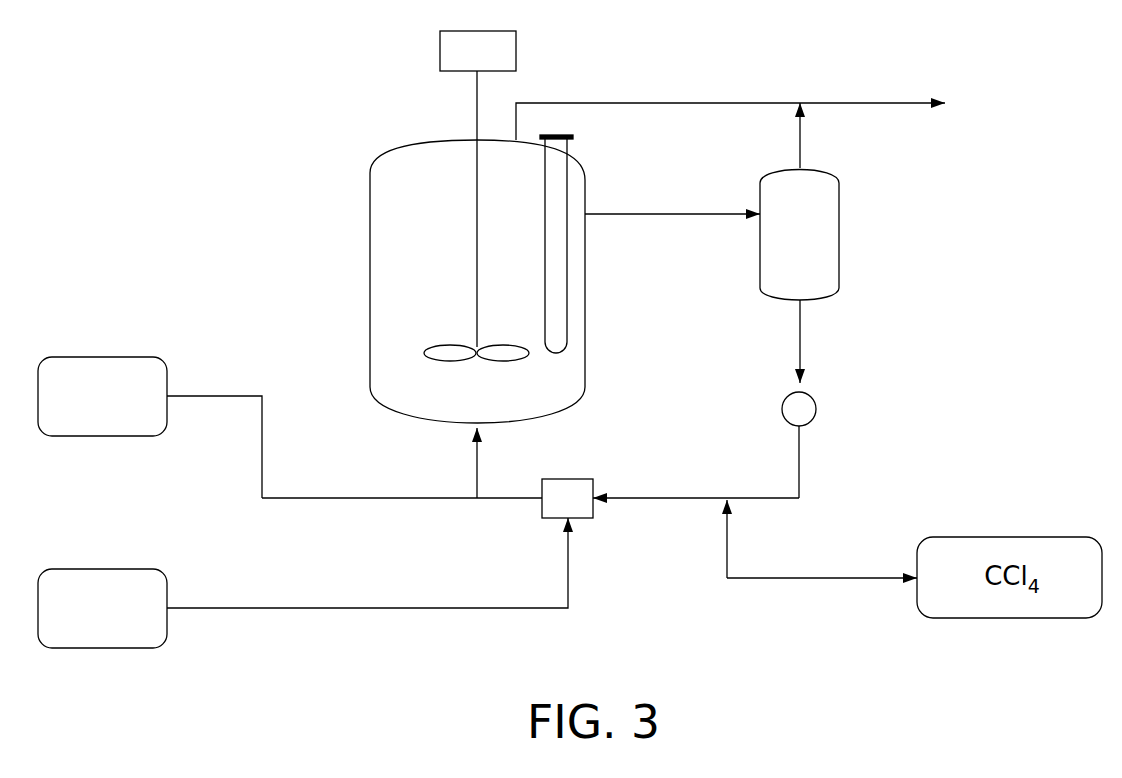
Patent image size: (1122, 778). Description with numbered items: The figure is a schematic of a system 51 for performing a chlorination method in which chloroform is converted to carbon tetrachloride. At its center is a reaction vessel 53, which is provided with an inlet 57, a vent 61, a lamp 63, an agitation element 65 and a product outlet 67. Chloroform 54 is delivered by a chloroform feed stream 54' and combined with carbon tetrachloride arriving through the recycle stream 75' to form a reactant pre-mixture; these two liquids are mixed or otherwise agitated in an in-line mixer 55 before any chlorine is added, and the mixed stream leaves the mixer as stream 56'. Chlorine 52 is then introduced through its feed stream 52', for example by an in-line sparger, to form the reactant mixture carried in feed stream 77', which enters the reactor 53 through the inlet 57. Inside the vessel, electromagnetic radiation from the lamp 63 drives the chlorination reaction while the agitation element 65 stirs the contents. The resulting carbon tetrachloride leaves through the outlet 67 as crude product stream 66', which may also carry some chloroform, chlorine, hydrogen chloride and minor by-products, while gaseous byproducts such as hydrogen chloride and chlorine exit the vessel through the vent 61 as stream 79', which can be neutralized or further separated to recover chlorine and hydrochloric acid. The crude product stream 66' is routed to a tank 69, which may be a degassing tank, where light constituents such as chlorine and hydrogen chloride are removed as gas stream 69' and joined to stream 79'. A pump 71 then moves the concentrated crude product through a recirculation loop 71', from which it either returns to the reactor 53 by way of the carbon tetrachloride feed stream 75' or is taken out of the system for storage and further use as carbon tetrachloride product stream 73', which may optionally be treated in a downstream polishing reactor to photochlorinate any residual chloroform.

The system 51 is at (252, 139).
The chlorine 52 is at (102, 370).
The feed stream 52' is at (224, 418).
The reaction vessel 53 is at (370, 242).
The chloroform 54 is at (102, 583).
The chloroform feed stream 54' is at (367, 587).
The in-line mixer 55 is at (560, 479).
The mixed feed line 56' is at (402, 524).
The inlet 57 is at (478, 428).
The vent 61 is at (508, 140).
The lamp 63 is at (545, 235).
The agitation element 65 is at (450, 361).
The product stream 66' is at (672, 246).
The product outlet 67 is at (585, 213).
The tank 69 is at (832, 235).
The gas stream 69' is at (840, 135).
The pump 71 is at (828, 399).
The recirculation loop 71' is at (661, 549).
The carbon tetrachloride product stream 73' is at (822, 539).
The recycle stream 75' is at (696, 469).
The feed stream 77' is at (445, 463).
The vent stream 79' is at (730, 95).